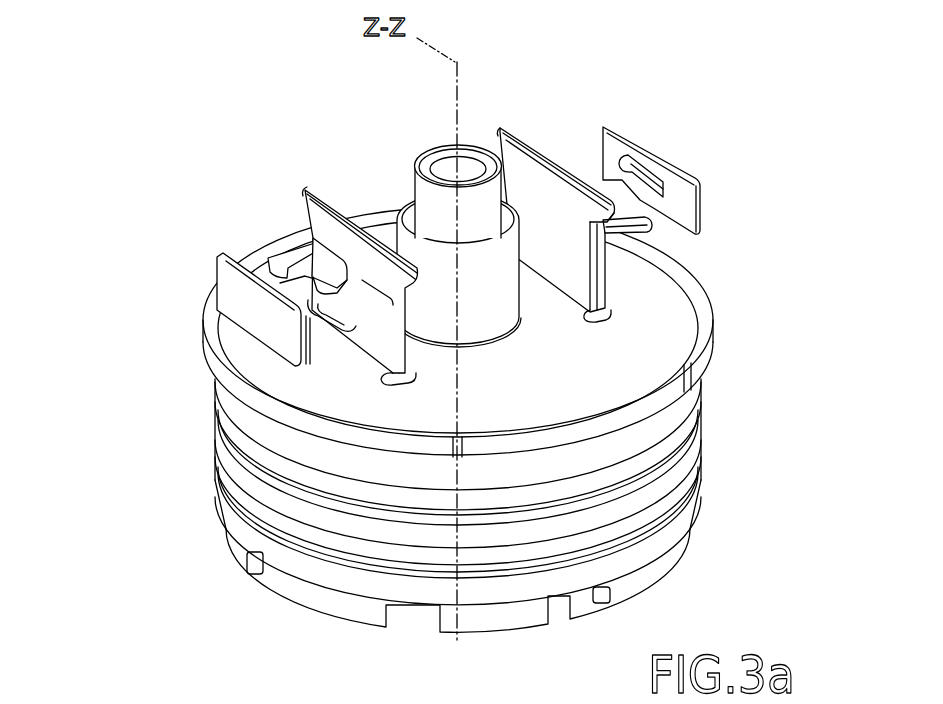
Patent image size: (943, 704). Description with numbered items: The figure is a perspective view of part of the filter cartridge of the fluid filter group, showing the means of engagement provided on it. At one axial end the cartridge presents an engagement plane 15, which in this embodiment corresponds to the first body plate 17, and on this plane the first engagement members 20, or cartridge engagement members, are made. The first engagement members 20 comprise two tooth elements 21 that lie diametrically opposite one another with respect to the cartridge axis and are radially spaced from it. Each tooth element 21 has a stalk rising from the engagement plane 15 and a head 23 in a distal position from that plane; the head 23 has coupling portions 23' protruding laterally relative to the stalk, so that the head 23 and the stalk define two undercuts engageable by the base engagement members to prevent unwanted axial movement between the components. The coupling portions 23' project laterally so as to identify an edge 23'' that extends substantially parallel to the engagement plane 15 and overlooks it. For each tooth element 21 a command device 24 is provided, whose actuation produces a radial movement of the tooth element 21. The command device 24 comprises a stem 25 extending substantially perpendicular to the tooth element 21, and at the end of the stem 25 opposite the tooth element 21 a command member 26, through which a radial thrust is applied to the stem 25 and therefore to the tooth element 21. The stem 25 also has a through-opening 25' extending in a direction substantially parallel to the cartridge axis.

The first engagement members 20 is at (156, 184).
The tooth element 21 is at (638, 179).
The head 23 is at (349, 232).
The coupling portions 23' is at (690, 162).
The edge 23'' is at (445, 283).
The command device 24 is at (726, 149).
The stem 25 is at (247, 211).
The through-opening 25' is at (290, 191).
The command member 26 is at (238, 294).
The first body plate 17 is at (407, 422).
The engagement plane 15 is at (458, 556).